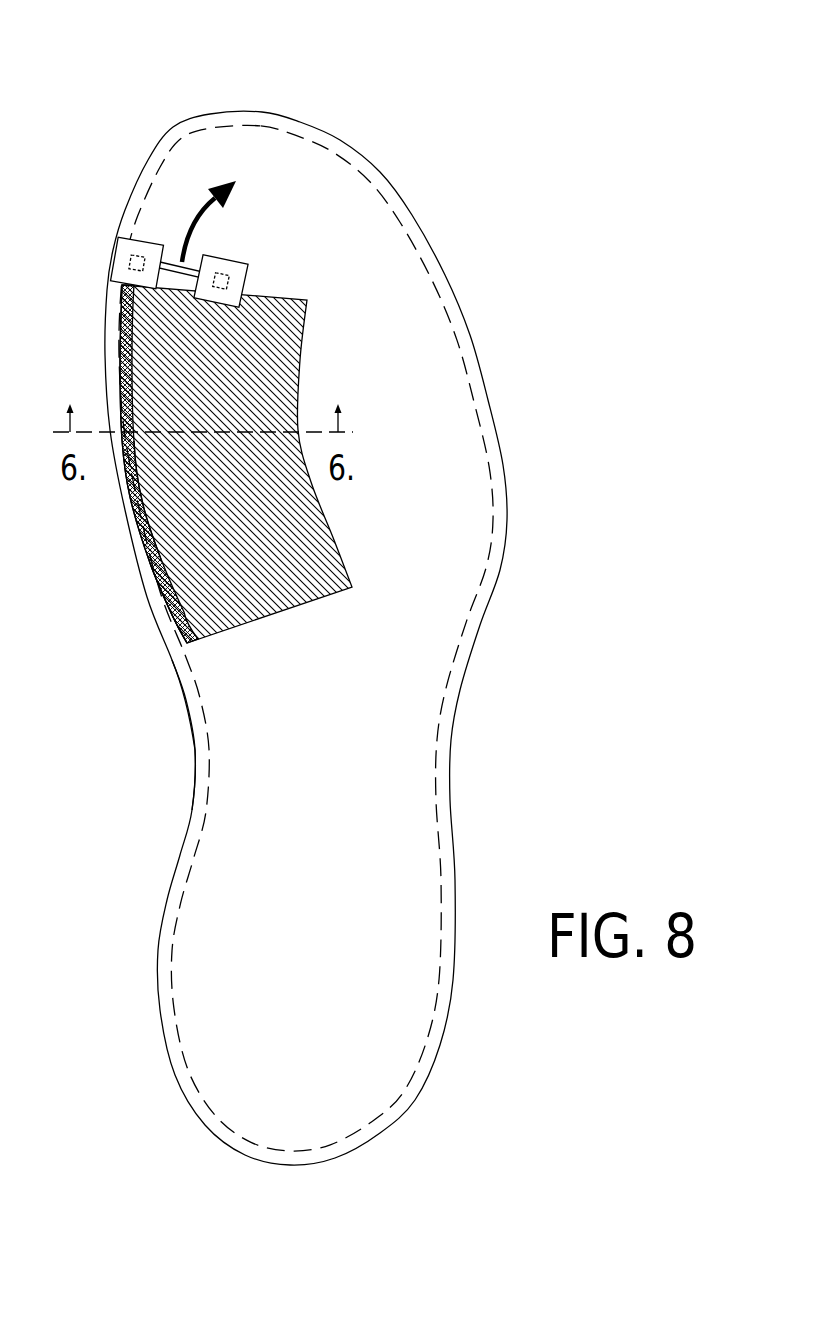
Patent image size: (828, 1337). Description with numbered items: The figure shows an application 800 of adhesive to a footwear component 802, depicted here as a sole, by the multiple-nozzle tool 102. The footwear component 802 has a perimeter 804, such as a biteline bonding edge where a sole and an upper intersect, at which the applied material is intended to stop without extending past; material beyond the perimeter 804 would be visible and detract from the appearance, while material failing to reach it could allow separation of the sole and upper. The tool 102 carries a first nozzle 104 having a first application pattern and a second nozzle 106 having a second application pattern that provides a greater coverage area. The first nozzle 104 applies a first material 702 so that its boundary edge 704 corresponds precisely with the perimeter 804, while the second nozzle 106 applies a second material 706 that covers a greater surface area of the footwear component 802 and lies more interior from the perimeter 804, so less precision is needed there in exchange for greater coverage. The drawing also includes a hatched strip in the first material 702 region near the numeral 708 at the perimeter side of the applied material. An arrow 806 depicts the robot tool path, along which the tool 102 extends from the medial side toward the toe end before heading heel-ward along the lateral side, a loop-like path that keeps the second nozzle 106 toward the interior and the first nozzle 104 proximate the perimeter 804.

The application of adhesive 800 is at (519, 155).
The footwear component 802 is at (373, 763).
The perimeter 804 is at (185, 688).
The arrow 806 is at (230, 150).
The second material 706 is at (313, 535).
The first material 702 is at (145, 558).
The strip inner edge 708 is at (170, 520).
The boundary edge 704 is at (159, 596).
The multiple-nozzle tool 102 is at (175, 283).
The first nozzle 104 is at (115, 262).
The second nozzle 106 is at (229, 263).